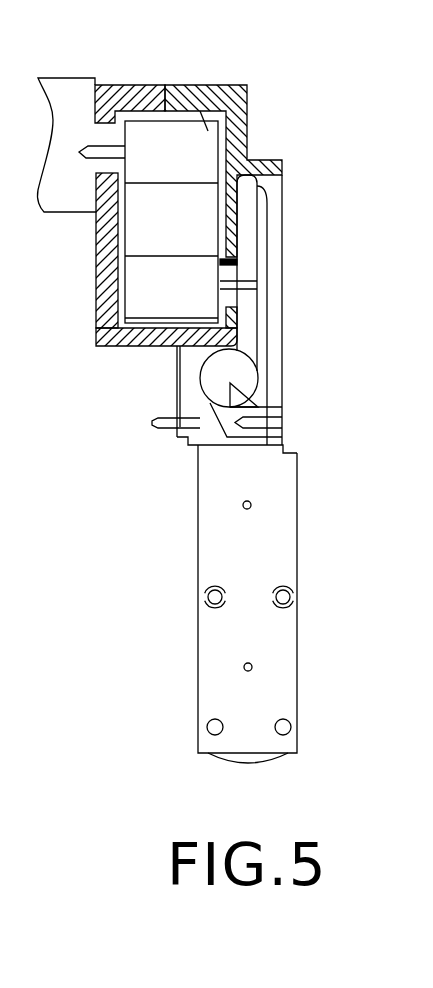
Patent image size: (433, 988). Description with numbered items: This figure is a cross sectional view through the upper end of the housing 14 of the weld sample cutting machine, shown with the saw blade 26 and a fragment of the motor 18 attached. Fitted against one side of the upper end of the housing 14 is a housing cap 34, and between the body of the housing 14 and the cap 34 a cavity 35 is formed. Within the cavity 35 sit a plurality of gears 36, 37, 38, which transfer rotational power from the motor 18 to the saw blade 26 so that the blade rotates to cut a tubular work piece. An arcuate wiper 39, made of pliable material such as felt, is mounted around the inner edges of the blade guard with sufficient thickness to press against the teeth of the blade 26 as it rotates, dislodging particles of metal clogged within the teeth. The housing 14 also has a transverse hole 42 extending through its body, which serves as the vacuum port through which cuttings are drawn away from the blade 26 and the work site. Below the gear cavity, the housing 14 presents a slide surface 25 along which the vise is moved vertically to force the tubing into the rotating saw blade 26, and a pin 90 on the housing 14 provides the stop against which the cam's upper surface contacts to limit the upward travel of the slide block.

The housing 14 is at (250, 155).
The motor 18 is at (65, 213).
The slide surface 25 is at (297, 530).
The saw blade 26 is at (268, 264).
The housing cap 34 is at (130, 87).
The cavity 35 is at (208, 131).
The gear 36 is at (165, 130).
The gear 37 is at (137, 243).
The gear 38 is at (97, 348).
The arcuate wiper 39 is at (266, 207).
The transverse hole 42 is at (230, 383).
The pin 90 is at (152, 422).